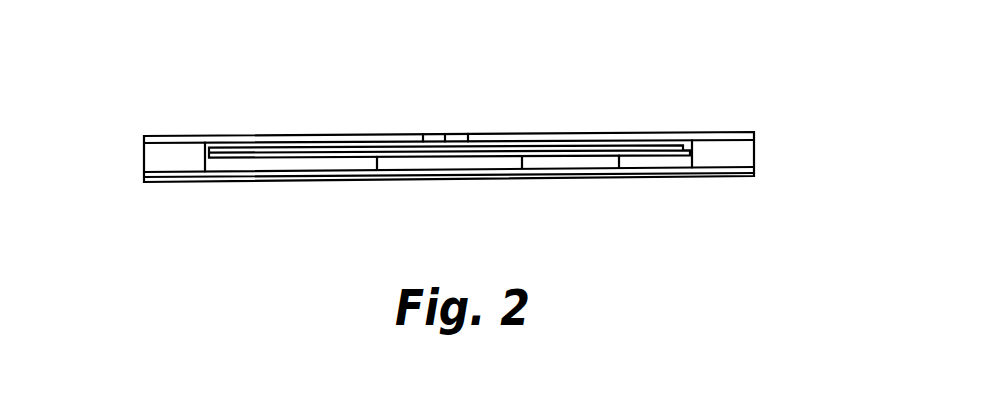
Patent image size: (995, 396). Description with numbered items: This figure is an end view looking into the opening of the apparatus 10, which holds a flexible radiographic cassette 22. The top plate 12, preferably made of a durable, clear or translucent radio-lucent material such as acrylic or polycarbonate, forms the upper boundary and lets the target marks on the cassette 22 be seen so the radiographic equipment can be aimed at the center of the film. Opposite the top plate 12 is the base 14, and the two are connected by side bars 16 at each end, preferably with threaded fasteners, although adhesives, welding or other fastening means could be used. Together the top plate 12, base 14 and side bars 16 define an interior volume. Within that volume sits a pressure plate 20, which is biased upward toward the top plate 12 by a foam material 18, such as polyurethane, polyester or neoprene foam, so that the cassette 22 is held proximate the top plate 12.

The apparatus 10 is at (540, 73).
The top plate 12 is at (286, 135).
The base 14 is at (228, 182).
The side bars 16 is at (144, 161).
The foam material 18 is at (443, 163).
The pressure plate 20 is at (620, 157).
The flexible radiographic cassette 22 is at (444, 135).